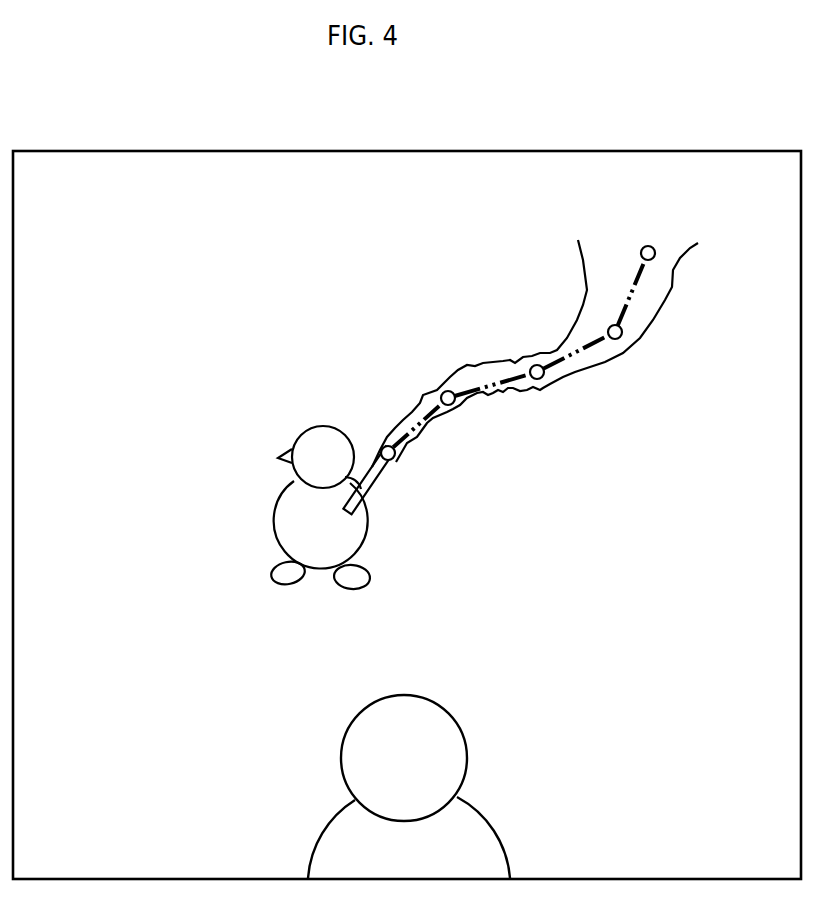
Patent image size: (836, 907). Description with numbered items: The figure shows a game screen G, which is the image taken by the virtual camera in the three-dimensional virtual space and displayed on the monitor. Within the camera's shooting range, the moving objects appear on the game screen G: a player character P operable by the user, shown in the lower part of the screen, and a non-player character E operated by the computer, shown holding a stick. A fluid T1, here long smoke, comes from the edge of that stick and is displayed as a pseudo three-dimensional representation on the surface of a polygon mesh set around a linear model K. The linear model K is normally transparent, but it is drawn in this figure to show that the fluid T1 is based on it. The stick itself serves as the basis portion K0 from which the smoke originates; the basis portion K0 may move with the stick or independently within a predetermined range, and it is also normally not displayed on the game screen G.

The game screen G is at (557, 150).
The non-player character E is at (331, 433).
The linear model K is at (485, 382).
The basis portion K0 is at (392, 463).
The fluid T1 is at (563, 377).
The player character P is at (460, 760).